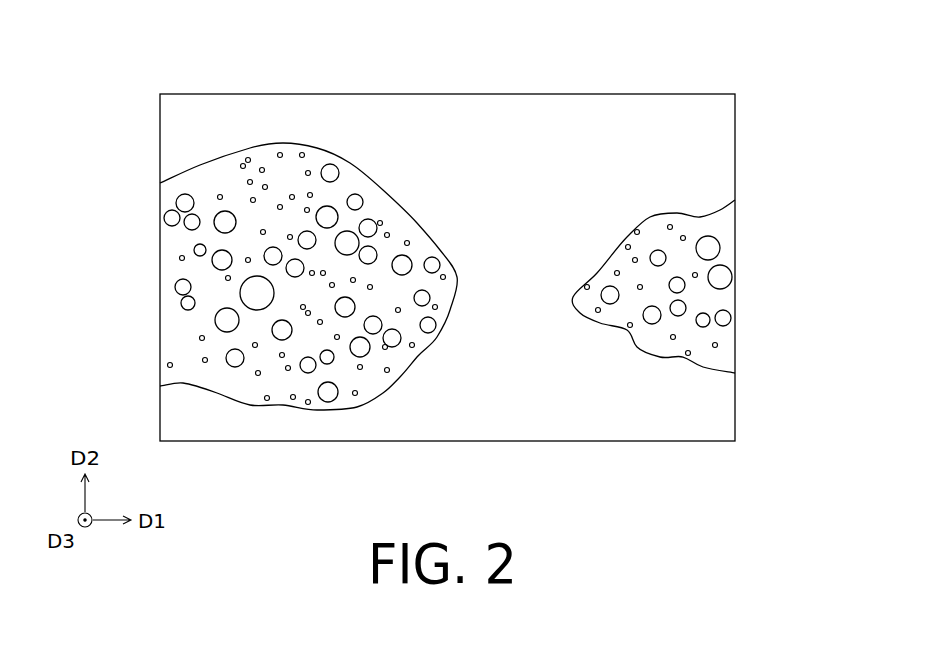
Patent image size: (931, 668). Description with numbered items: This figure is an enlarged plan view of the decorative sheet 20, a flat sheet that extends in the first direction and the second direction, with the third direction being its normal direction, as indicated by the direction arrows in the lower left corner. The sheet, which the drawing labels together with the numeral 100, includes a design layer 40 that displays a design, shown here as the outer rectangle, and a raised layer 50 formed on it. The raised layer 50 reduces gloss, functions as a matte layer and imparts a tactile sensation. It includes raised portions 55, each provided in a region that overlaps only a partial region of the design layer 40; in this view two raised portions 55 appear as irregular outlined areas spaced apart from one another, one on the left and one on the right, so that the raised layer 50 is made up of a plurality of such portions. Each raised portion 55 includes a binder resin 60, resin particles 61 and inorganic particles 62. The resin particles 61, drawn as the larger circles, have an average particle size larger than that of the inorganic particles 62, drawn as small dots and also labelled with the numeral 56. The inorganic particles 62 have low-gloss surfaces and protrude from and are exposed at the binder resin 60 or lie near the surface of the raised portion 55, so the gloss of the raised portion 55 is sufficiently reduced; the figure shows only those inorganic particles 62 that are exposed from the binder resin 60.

The display device 100 is at (127, 148).
The decorative sheet 20 is at (459, 284).
The design layer 40 is at (535, 405).
The binder resin 60 is at (660, 213).
The raised layer 50 is at (292, 398).
The raised portion 55 is at (688, 365).
The resin particles 61 is at (675, 316).
The small openings 56 is at (584, 288).
The inorganic particles 62 is at (673, 337).